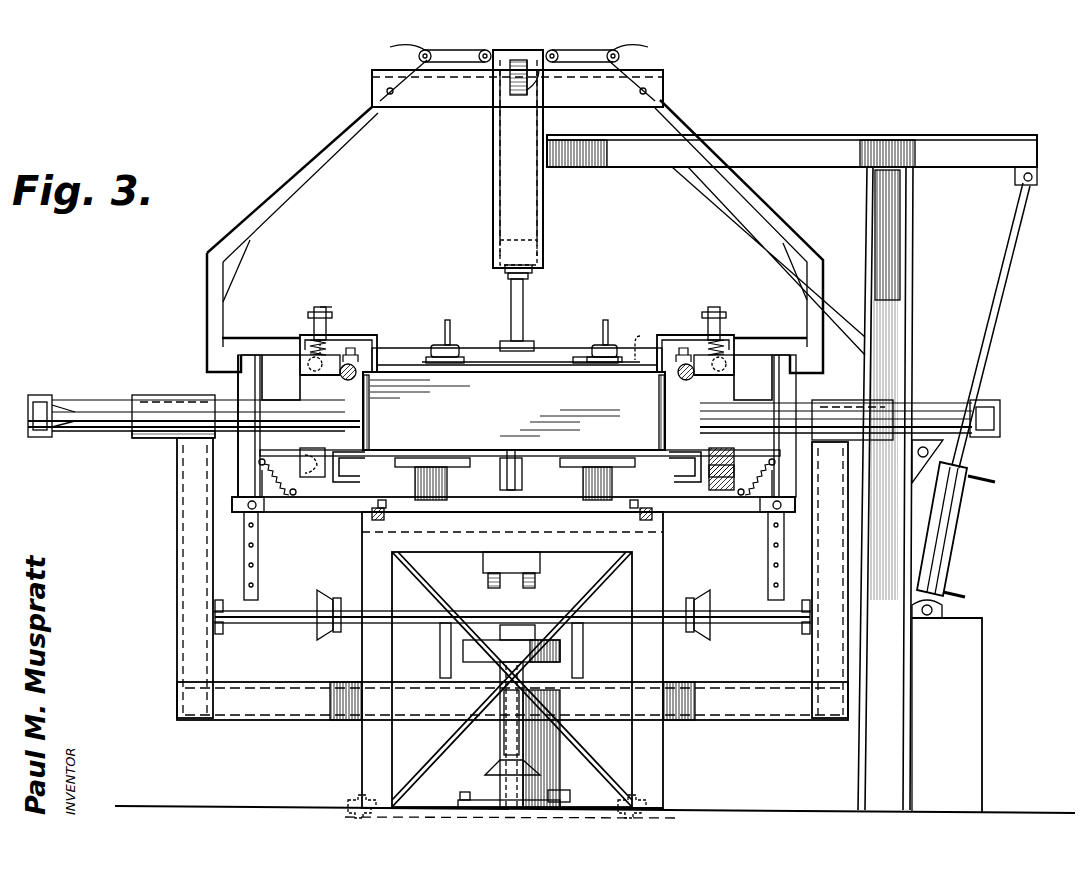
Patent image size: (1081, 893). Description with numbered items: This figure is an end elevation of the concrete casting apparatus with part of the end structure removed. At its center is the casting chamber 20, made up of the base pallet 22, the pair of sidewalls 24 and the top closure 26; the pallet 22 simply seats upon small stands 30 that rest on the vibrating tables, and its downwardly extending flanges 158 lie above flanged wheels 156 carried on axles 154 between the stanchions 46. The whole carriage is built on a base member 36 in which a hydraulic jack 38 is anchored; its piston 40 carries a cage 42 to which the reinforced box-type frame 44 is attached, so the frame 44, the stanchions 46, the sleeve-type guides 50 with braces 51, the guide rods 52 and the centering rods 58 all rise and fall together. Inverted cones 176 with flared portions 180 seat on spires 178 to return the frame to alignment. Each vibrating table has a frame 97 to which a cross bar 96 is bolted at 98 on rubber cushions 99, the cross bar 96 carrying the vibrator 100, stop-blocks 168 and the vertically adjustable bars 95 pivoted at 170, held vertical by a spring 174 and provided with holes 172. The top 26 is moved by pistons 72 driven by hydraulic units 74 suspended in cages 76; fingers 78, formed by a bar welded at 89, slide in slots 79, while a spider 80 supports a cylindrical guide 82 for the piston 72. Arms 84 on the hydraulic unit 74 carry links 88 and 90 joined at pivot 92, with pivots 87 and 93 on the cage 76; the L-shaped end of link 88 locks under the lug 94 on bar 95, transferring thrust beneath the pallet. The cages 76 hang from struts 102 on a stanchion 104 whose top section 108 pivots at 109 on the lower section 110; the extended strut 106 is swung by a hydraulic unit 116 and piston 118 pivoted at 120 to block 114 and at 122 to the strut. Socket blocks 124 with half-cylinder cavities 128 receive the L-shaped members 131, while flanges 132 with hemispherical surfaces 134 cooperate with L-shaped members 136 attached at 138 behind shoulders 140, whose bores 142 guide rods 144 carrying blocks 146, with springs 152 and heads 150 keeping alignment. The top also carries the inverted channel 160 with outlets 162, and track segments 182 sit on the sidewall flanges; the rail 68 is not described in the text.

The casting chamber 20 is at (514, 411).
The base pallet 22 is at (412, 452).
The sidewalls 24 is at (370, 420).
The top closure 26 is at (555, 350).
The stands 30 is at (415, 480).
The base member 36 is at (710, 807).
The hydraulic jack 38 is at (560, 775).
The piston 40 is at (540, 630).
The cage 42 is at (440, 645).
The box-type frame 44 is at (296, 718).
The stanchions 46 is at (180, 565).
The sleeve-type guides 50 is at (85, 400).
The braces 51 is at (112, 410).
The guide rods 52 is at (340, 378).
The centering rods 58 is at (240, 372).
The rail 68 is at (545, 355).
The pistons 72 is at (524, 312).
The hydraulic unit 74 is at (495, 190).
The cage 76 is at (544, 248).
The fingers 78 is at (512, 75).
The slots 79 is at (540, 105).
The spider 80 is at (503, 268).
The cylindrical guide member 82 is at (508, 278).
The arms 84 is at (428, 100).
The pivot point 87 is at (375, 95).
The link 88 is at (288, 195).
The weld 89 is at (520, 80).
The link 90 is at (514, 50).
The pivot 92 is at (418, 58).
The pivot point 93 is at (480, 63).
The lug 94 is at (240, 348).
The vertically adjustable bar 95 is at (260, 386).
The cross bar 96 is at (310, 513).
The frame 97 is at (664, 588).
The bolts 98 is at (372, 520).
The rubber cushions 99 is at (372, 512).
The vibrator 100 is at (490, 560).
The struts 102 is at (776, 150).
The vertical stanchion 104 is at (916, 236).
The strut extension 106 is at (1005, 150).
The top stanchion section 108 is at (895, 292).
The pivot 109 is at (945, 458).
The lower stanchion section 110 is at (905, 755).
The block 114 is at (982, 700).
The hydraulic unit 116 is at (955, 530).
The piston 118 is at (995, 335).
The pivotal attachment 120 is at (948, 612).
The pivotal attachment 122 is at (1034, 182).
The socket blocks 124 is at (517, 479).
The half-cylinder 128 is at (738, 473).
The L-shaped members 131 is at (300, 455).
The flanges 132 is at (285, 355).
The hemispherical bearing surface 134 is at (300, 372).
The L-shaped member 136 is at (375, 340).
The attachment 138 is at (642, 332).
The shoulder 140 is at (380, 338).
The cylindrical bore 142 is at (308, 328).
The rod 144 is at (318, 310).
The block 146 is at (300, 372).
The head 150 is at (322, 310).
The coil spring 152 is at (325, 340).
The axle 154 is at (280, 624).
The flanged wheels 156 is at (325, 640).
The pallet flanges 158 is at (517, 471).
The inverted channel 160 is at (462, 350).
The outlet means 162 is at (449, 330).
The stop-block 168 is at (238, 498).
The pivot point 170 is at (249, 510).
The holes 172 is at (252, 560).
The spring 174 is at (292, 495).
The cone-like structure 176 is at (500, 740).
The spires 178 is at (500, 795).
The flared portion 180 is at (490, 773).
The track segment 182 is at (350, 346).